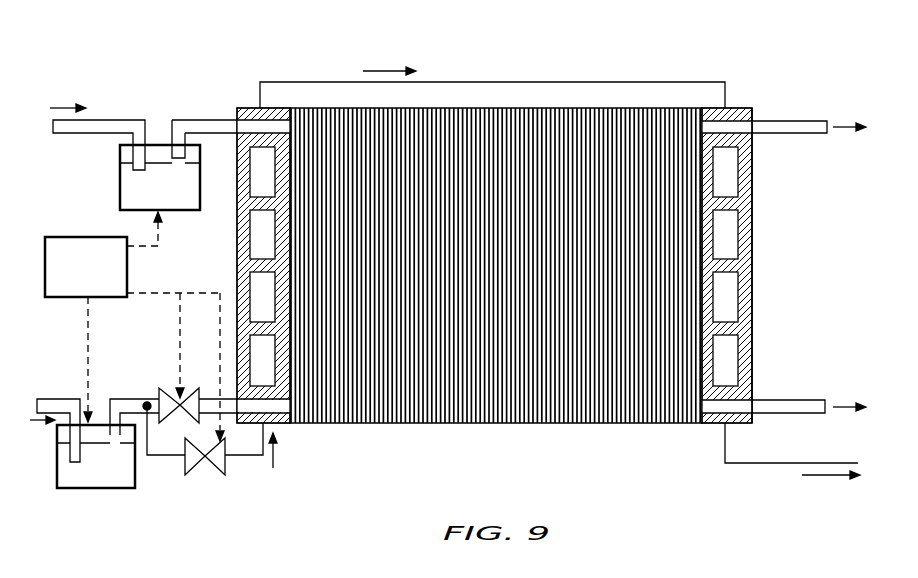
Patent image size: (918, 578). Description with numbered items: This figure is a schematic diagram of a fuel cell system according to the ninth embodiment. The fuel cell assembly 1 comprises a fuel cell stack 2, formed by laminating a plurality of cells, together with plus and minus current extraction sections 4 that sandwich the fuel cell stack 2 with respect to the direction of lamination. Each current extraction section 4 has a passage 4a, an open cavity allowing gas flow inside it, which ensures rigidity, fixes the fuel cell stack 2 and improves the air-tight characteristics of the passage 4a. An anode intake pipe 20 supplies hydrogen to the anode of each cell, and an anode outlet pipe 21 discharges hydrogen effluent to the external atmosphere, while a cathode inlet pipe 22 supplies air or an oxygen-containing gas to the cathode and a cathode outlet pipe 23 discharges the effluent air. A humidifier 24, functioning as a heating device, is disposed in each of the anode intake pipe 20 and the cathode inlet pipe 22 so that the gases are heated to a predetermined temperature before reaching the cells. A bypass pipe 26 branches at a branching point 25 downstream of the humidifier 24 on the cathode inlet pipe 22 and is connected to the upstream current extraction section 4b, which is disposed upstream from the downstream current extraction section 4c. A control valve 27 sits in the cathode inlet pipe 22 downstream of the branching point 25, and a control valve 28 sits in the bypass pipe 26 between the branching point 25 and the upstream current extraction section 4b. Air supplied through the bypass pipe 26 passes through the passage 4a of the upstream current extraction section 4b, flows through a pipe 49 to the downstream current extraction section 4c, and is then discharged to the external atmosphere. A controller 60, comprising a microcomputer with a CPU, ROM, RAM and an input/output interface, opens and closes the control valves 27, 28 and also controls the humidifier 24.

The fuel cell assembly 1 is at (442, 101).
The fuel cell stack 2 is at (520, 125).
The current extraction section 4 is at (737, 108).
The passage 4a is at (267, 292).
The upstream current extraction section 4b is at (236, 243).
The downstream current extraction section 4c is at (752, 197).
The anode intake pipe 20 is at (88, 119).
The anode outlet pipe 21 is at (798, 120).
The cathode inlet pipe 22 is at (58, 398).
The cathode outlet pipe 23 is at (798, 397).
The humidifier 24 is at (120, 198).
The branching point 25 is at (147, 400).
The bypass pipe 26 is at (148, 457).
The control valve 27 is at (196, 388).
The control valve 28 is at (192, 472).
The pipe 49 is at (313, 82).
The controller 60 is at (134, 326).